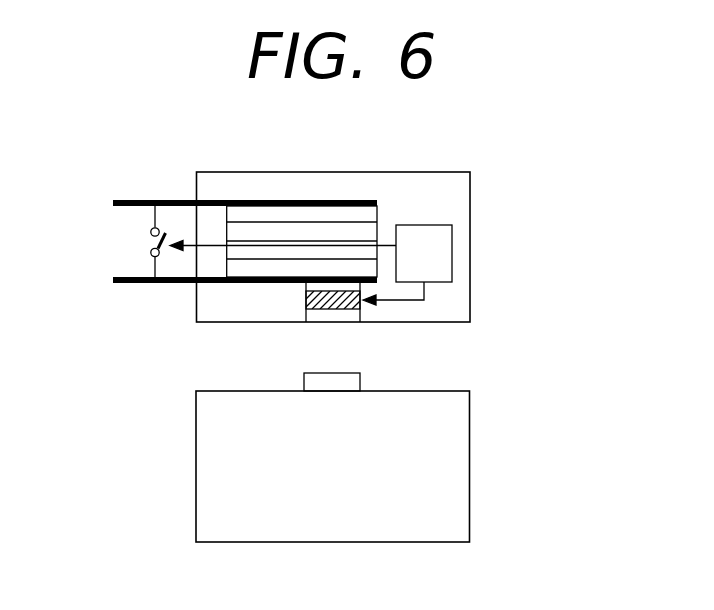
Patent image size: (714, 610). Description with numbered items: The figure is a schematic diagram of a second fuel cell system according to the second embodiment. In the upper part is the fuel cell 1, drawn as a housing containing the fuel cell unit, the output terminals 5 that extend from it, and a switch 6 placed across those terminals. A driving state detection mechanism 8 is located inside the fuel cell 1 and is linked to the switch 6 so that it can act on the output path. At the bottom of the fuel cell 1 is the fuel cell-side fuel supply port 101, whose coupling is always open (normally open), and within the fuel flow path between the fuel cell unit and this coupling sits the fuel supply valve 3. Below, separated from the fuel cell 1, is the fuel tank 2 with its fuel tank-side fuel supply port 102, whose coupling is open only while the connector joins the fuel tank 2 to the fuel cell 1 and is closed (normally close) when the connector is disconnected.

The fuel cell 1 is at (362, 222).
The fuel tank 2 is at (443, 470).
The fuel supply valve 3 is at (348, 307).
The output terminals 5 is at (128, 200).
The switch 6 is at (148, 243).
The driving state detection mechanism 8 is at (437, 257).
The fuel cell-side fuel supply port 101 is at (337, 313).
The fuel tank-side fuel supply port 102 is at (333, 387).